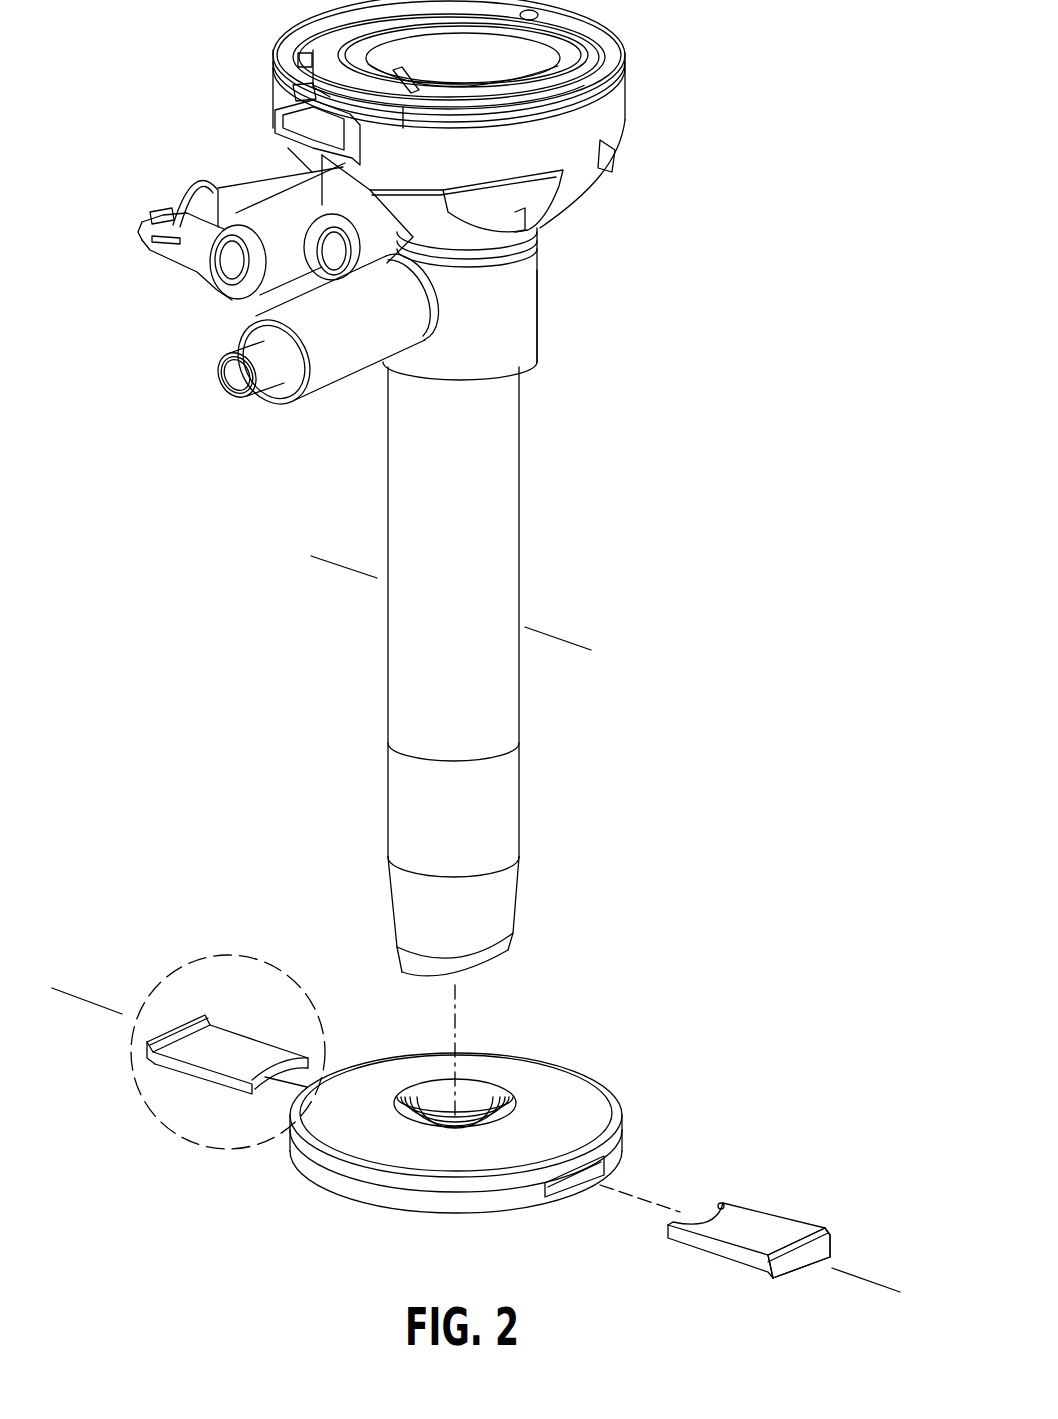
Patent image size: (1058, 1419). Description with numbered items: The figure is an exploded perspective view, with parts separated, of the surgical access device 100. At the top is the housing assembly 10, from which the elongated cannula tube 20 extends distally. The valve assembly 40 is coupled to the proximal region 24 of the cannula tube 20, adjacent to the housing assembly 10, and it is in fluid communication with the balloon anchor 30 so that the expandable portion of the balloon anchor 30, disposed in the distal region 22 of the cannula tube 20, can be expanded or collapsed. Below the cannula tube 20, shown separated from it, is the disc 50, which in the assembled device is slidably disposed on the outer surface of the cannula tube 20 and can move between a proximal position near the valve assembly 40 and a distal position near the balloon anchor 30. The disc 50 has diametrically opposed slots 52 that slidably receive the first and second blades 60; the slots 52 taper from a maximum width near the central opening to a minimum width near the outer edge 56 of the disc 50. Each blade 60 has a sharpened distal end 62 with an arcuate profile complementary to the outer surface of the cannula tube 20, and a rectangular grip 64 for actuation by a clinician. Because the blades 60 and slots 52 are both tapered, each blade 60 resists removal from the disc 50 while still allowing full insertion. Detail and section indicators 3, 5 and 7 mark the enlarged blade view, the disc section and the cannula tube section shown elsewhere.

The surgical access device 100 is at (417, 488).
The housing assembly 10 is at (495, 181).
The cannula tube 20 is at (505, 671).
The distal region 22 is at (518, 898).
The proximal region 24 is at (535, 369).
The balloon anchor 30 is at (500, 884).
The valve assembly 40 is at (277, 289).
The disc 50 is at (474, 1143).
The slots 52 is at (560, 1188).
The outer edge 56 is at (587, 1072).
The blades 60 is at (758, 1232).
The sharpened distal end 62 is at (712, 1220).
The rectangular grip 64 is at (793, 1260).
The detail view indicator FIG. 3 is at (255, 958).
The section line 5- 5 is at (72, 972).
The section line 7- 7 is at (332, 540).